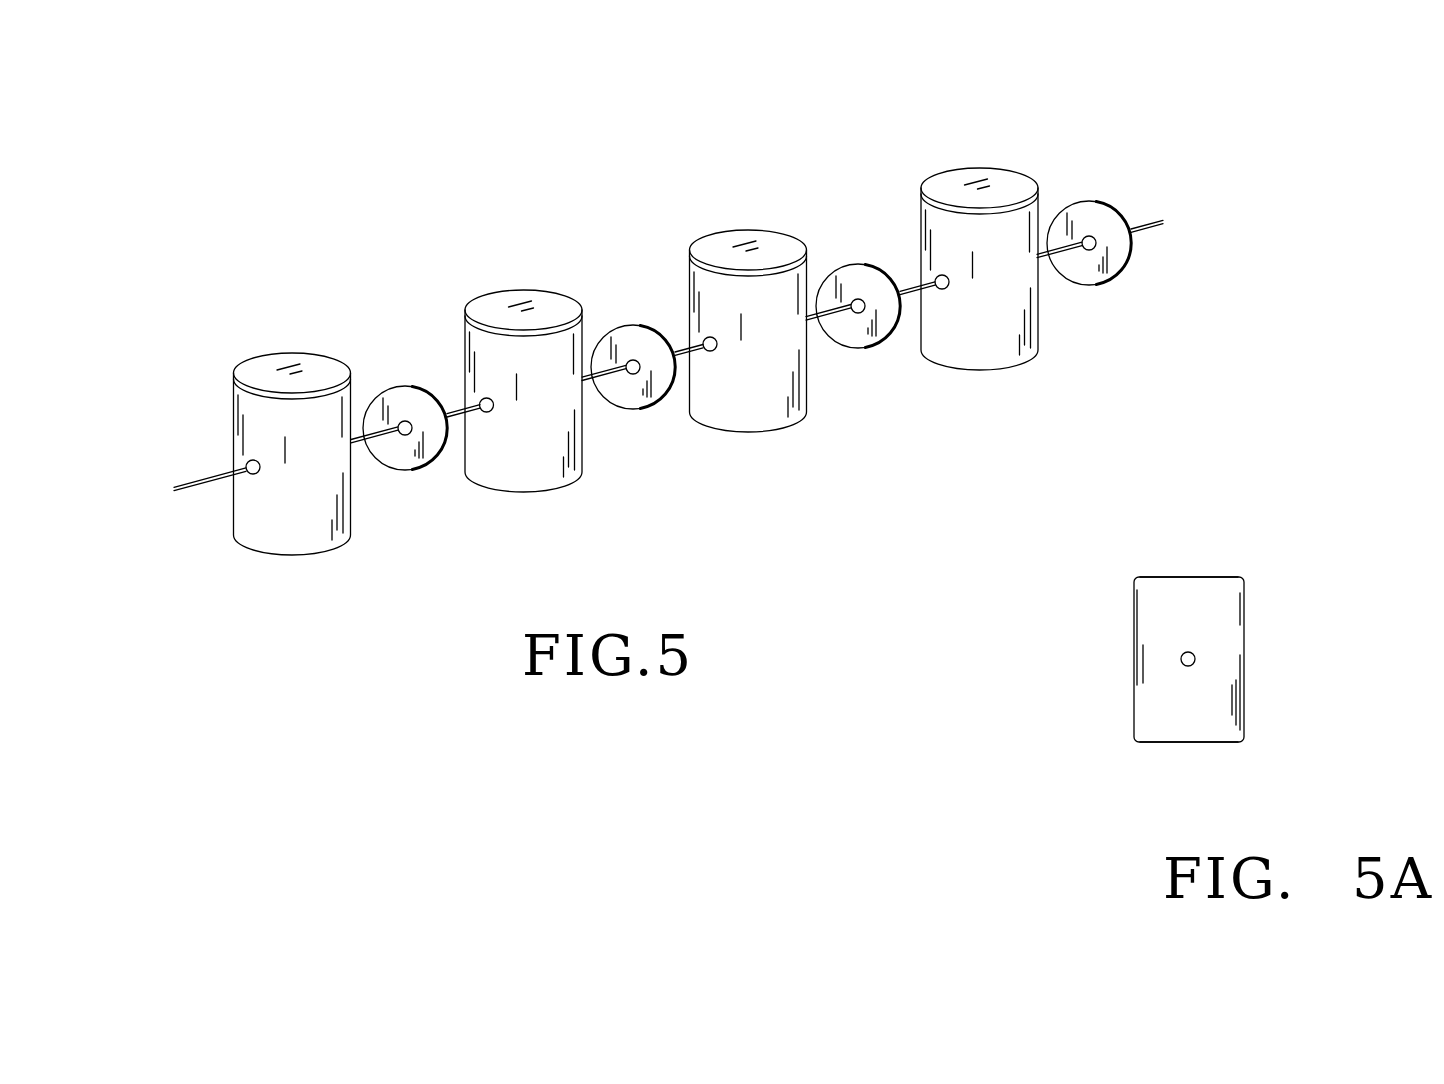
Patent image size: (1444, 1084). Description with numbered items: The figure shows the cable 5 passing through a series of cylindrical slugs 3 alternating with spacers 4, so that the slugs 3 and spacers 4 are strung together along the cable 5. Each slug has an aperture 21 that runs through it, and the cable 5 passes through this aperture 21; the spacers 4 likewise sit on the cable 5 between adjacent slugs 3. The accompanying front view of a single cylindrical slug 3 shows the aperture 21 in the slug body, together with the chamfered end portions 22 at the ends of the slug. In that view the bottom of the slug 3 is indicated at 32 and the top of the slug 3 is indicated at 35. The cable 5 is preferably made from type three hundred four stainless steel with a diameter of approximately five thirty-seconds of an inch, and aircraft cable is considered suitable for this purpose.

In FIG. 5, the slug 3 is at (505, 357).
In FIG. 5A, the slug 3 is at (1198, 607).
In FIG. 5, the spacer 4 is at (640, 340).
In FIG. 5, the cable 5 is at (1153, 227).
In FIG. 5A, the aperture 21 is at (1196, 657).
In FIG. 5A, the chamfered end portion 22 is at (1133, 577).
In FIG. 5A, the top of the slug 35 is at (1183, 575).
In FIG. 5A, the bottom of the slug 32 is at (1188, 746).